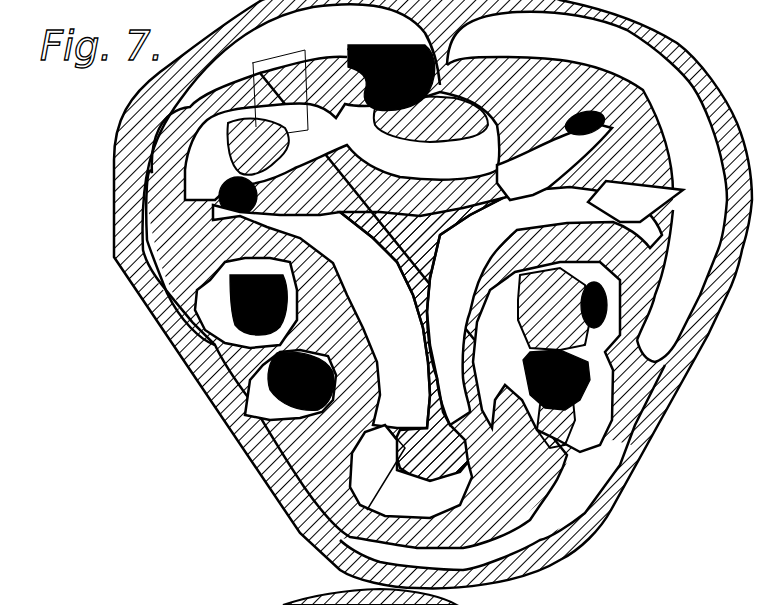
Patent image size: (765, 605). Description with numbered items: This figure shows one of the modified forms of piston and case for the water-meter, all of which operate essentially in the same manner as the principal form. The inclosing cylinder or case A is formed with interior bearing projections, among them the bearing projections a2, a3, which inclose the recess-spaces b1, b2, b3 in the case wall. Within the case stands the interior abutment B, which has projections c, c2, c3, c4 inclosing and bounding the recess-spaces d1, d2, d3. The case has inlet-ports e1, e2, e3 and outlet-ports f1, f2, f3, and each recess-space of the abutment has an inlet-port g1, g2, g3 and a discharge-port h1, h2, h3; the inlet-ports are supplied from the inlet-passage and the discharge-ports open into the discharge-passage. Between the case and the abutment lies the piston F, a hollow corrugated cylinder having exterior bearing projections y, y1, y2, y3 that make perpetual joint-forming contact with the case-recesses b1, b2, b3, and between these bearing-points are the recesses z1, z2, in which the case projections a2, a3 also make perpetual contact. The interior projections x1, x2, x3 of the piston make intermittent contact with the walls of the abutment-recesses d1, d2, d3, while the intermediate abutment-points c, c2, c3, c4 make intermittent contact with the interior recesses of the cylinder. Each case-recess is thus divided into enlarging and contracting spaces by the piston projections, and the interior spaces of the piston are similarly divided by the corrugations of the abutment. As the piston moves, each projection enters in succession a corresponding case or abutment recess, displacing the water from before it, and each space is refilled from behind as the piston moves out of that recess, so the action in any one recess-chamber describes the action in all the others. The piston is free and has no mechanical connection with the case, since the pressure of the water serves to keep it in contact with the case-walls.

The cylinder A is at (433, 294).
The interior abutment B is at (421, 339).
The recess-space b1 is at (587, 187).
The recess-space b2 is at (502, 467).
The recess-space b3 is at (291, 174).
The abutment projection c is at (431, 119).
The abutment projection c2 is at (432, 457).
The abutment projection c3 is at (627, 153).
The abutment projection c4 is at (258, 146).
The abutment recess-space d1 is at (554, 161).
The abutment recess-space d2 is at (544, 306).
The abutment recess-space d3 is at (321, 316).
The inlet-port e1 is at (482, 39).
The inlet-port e2 is at (593, 404).
The inlet-port e3 is at (290, 385).
The outlet-port f1 is at (644, 327).
The outlet-port f2 is at (258, 296).
The outlet-port f3 is at (391, 67).
The inlet-port of abutment recess g1 is at (585, 131).
The inlet-port of abutment recess g2 is at (556, 399).
The inlet-port of abutment recess g3 is at (246, 196).
The discharge-port of abutment recess h1 is at (635, 201).
The discharge-port of abutment recess h2 is at (411, 471).
The discharge-port of abutment recess h3 is at (280, 81).
The interior projection of piston x1 is at (398, 198).
The interior projection of piston x2 is at (476, 307).
The interior projection of piston x3 is at (308, 317).
The exterior bearing projection y is at (244, 303).
The exterior bearing projection y1 is at (603, 305).
The exterior bearing projection y2 is at (286, 445).
The exterior bearing projection y3 is at (486, 78).
The piston recess z1 is at (342, 146).
The piston recess z2 is at (546, 357).
The bearing projection of cylinder a2 is at (554, 309).
The bearing projection of cylinder a3 is at (345, 301).
The piston F is at (514, 141).